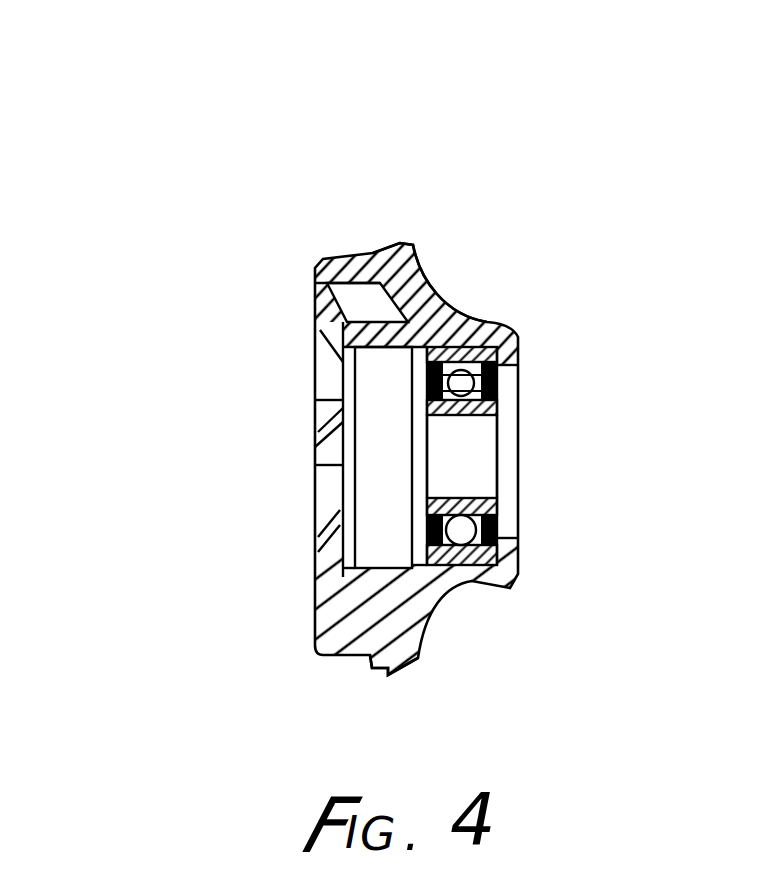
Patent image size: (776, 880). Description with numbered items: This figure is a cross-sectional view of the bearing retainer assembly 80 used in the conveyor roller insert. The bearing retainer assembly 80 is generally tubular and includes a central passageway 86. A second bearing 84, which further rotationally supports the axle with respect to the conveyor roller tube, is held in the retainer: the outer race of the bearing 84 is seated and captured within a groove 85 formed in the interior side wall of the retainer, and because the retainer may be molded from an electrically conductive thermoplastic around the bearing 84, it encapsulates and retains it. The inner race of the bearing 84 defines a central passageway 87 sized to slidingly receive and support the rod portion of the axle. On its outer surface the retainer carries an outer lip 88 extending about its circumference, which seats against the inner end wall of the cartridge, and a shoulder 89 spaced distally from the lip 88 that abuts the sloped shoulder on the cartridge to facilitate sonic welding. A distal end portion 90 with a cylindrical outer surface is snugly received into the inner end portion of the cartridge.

The bearing retainer assembly 80 is at (242, 681).
The second bearing 84 is at (533, 402).
The groove 85 is at (498, 565).
The central passageway 86 is at (370, 452).
The central passageway 87 is at (478, 464).
The outer lip 88 is at (392, 244).
The shoulder 89 is at (372, 253).
The distal end portion 90 is at (345, 656).